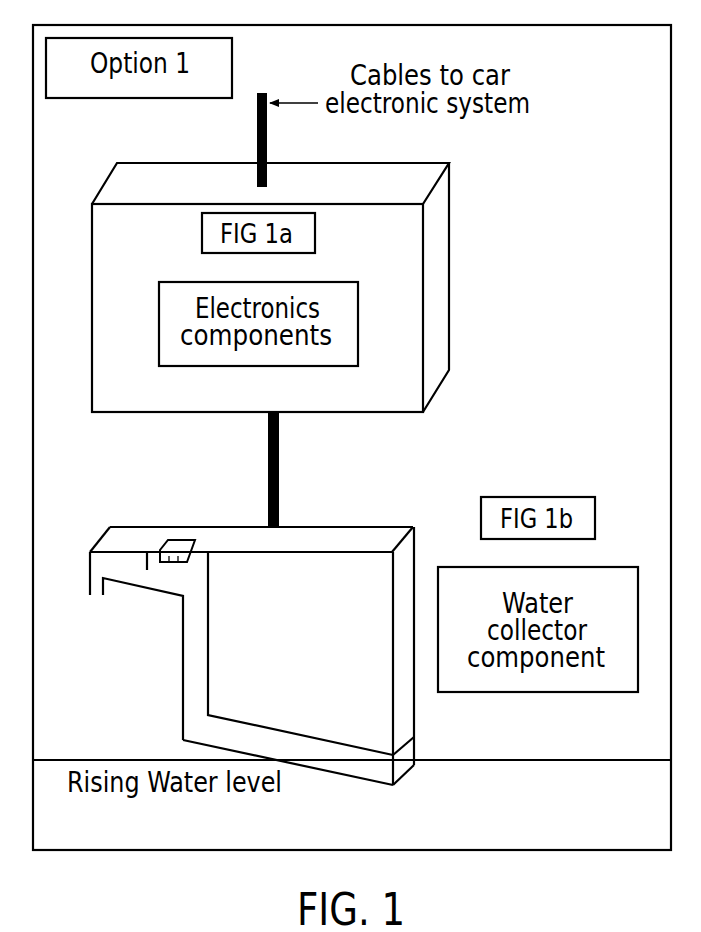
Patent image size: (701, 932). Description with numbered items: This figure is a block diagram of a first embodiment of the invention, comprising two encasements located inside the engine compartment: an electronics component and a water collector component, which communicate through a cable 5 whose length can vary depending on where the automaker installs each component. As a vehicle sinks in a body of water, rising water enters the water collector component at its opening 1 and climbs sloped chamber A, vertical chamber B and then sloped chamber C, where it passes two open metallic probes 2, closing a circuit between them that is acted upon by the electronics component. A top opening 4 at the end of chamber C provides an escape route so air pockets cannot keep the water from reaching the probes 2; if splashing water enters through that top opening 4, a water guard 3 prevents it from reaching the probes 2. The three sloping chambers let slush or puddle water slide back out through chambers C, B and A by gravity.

The opening 1 is at (406, 751).
The open metallic probes 2 is at (188, 538).
The water guard 3 is at (136, 559).
The top opening 4 is at (100, 607).
The cable 5 is at (282, 475).